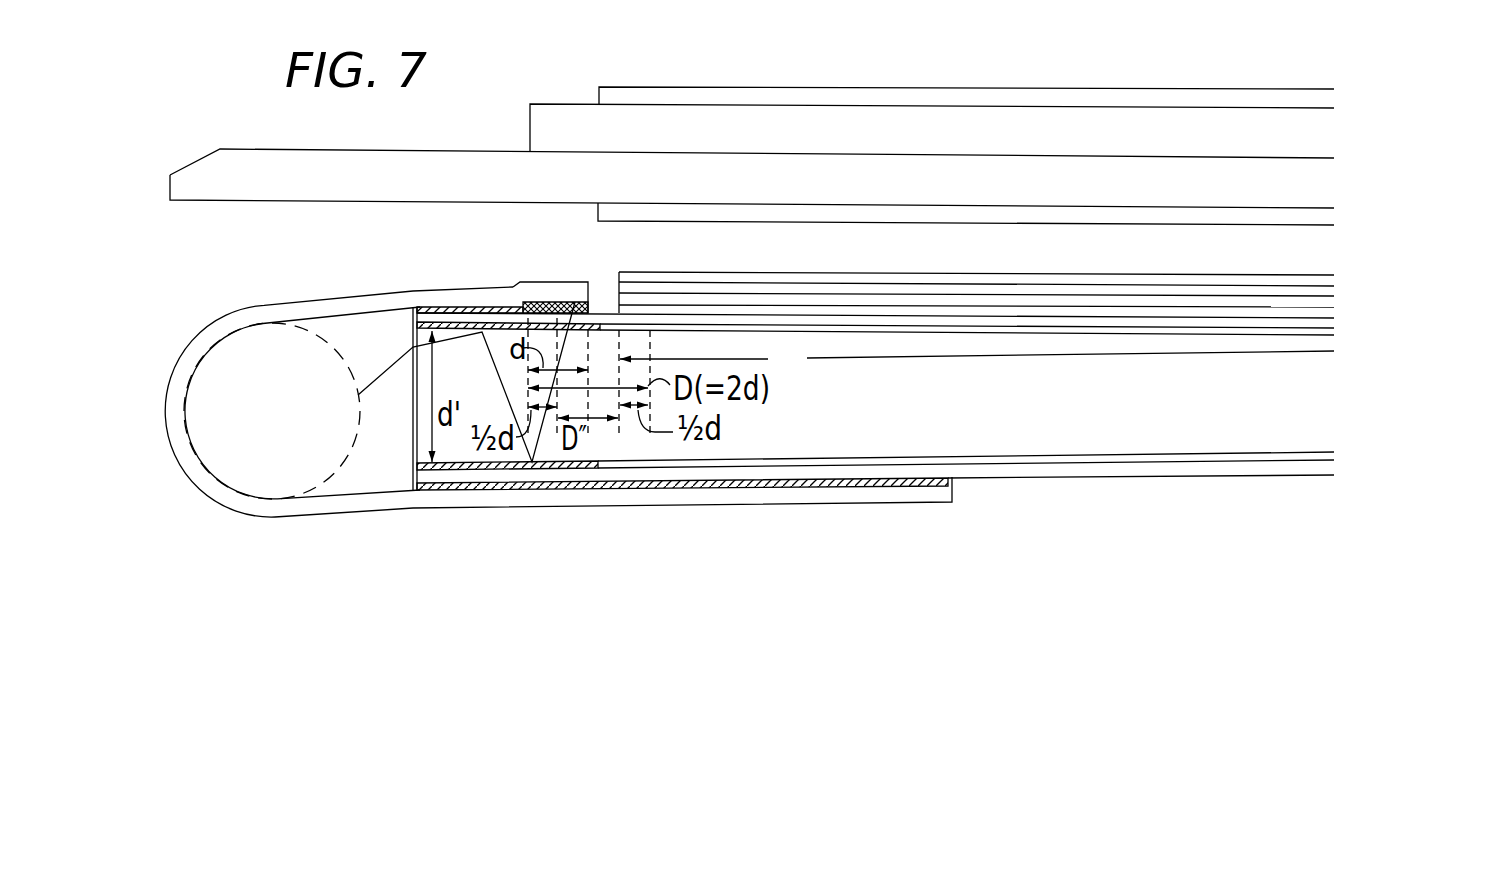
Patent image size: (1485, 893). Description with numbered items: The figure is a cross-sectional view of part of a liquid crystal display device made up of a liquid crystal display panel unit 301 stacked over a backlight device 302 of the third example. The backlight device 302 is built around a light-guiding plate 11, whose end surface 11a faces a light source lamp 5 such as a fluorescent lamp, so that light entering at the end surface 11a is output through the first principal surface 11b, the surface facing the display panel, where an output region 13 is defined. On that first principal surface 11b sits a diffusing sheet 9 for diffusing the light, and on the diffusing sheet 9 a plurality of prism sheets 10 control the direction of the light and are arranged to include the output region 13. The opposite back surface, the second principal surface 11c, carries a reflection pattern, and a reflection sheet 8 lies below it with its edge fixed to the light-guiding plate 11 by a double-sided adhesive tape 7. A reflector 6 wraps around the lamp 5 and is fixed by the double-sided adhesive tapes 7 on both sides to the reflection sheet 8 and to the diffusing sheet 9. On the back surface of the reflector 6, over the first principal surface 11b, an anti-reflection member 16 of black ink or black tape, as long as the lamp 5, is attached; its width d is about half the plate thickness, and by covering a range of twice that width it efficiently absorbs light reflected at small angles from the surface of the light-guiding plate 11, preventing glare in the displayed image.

The liquid crystal display panel unit 301 is at (1343, 88).
The backlight device 302 is at (1397, 498).
The prism sheets 10 is at (1340, 275).
The diffusing sheet 9 is at (1237, 323).
The light-guiding plate 11 is at (1153, 433).
The end surface 11a is at (420, 430).
The first principal surface 11b is at (1293, 337).
The second principal surface 11c is at (1280, 451).
The output region 13 is at (977, 360).
The anti-reflection member 16 is at (555, 302).
The double-sided adhesive tape 7 is at (453, 305).
The reflector 6 is at (338, 305).
The lamp 5 is at (238, 463).
The reflection sheet 8 is at (1063, 472).